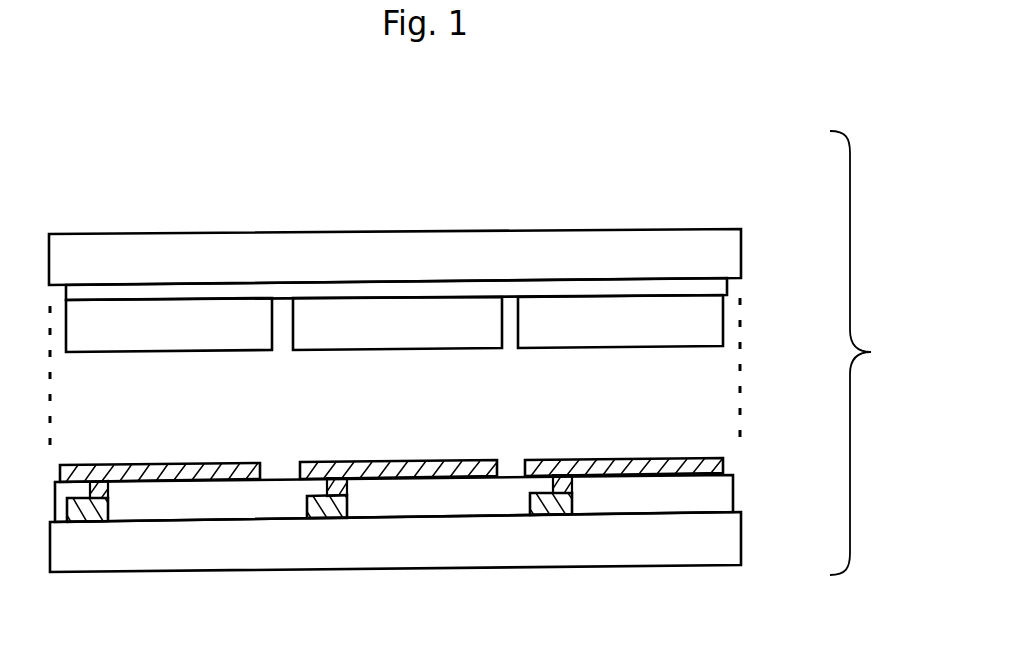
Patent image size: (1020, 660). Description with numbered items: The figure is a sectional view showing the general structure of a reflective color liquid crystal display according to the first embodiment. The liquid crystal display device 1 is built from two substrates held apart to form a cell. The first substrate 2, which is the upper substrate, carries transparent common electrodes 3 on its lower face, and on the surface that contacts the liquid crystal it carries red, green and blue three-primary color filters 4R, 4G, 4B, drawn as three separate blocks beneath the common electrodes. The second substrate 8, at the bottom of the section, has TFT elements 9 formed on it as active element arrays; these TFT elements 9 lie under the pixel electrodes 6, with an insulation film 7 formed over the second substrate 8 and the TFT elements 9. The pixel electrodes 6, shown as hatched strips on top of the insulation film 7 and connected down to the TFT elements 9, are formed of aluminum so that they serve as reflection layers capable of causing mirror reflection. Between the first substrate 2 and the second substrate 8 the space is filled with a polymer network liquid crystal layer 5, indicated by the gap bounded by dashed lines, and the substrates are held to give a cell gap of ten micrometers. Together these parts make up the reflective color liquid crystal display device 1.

The liquid crystal display device 1 is at (865, 353).
The first substrate 2 is at (430, 217).
The transparent common electrodes 3 is at (396, 214).
The red color filter 4R is at (169, 270).
The green color filter 4G is at (397, 270).
The blue color filter 4B is at (620, 265).
The polymer network liquid crystal layer 5 is at (441, 371).
The pixel electrodes 6 is at (445, 441).
The insulation film 7 is at (441, 466).
The second substrate 8 is at (438, 513).
The TFT elements 9 is at (395, 569).